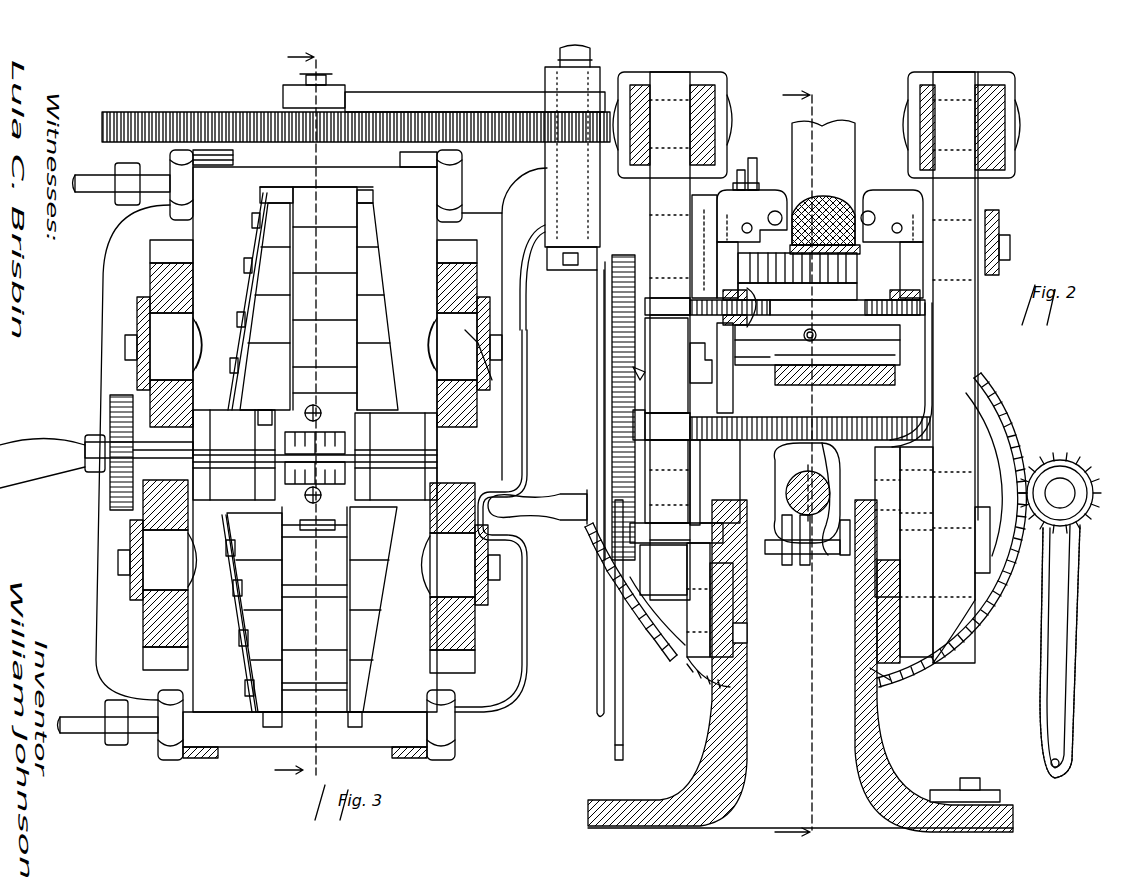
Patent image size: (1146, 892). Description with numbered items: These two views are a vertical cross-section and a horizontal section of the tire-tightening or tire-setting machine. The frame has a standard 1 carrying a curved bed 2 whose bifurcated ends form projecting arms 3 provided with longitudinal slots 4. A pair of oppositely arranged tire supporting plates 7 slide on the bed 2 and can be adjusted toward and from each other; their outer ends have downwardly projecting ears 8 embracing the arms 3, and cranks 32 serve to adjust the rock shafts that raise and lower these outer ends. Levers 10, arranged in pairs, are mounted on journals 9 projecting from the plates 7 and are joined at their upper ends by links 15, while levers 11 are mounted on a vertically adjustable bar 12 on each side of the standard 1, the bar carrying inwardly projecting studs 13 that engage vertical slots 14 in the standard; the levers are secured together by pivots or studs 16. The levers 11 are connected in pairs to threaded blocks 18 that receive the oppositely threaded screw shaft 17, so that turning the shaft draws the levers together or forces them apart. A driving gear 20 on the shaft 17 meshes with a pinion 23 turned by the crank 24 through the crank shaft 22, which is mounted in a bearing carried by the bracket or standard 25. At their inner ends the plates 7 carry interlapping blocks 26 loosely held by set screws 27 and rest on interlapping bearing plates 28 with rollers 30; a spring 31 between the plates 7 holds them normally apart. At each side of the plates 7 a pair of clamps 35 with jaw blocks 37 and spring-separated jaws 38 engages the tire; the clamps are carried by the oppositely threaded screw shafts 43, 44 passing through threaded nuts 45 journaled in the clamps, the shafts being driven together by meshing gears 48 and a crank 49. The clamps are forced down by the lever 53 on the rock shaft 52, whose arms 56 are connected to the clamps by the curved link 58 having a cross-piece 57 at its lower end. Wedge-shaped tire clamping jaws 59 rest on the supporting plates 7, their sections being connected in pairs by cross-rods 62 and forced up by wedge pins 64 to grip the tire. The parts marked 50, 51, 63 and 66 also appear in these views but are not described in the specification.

In FIG. 2, the standard 1 is at (870, 724).
In FIG. 2, the curved bed 2 is at (920, 395).
In FIG. 3, the projecting arms 3 is at (405, 155).
In FIG. 3, the slots 4 is at (302, 410).
In FIG. 2, the slots 4 is at (800, 463).
In FIG. 3, the tire supporting plates 7 is at (312, 457).
In FIG. 3, the ears 8 is at (170, 163).
In FIG. 3, the journals 9 is at (490, 378).
In FIG. 2, the journals 9 is at (1000, 248).
In FIG. 3, the levers 10 is at (480, 425).
In FIG. 2, the levers 10 is at (650, 190).
In FIG. 2, the levers 11 is at (680, 650).
In FIG. 2, the vertically adjustable bar 12 is at (715, 672).
In FIG. 2, the studs 13 is at (740, 610).
In FIG. 2, the vertical slots 14 is at (748, 635).
In FIG. 2, the links 15 is at (1000, 80).
In FIG. 2, the pivots or studs 16 is at (990, 570).
In FIG. 3, the screw shaft 17 is at (283, 160).
In FIG. 2, the screw shaft 17 is at (826, 470).
In FIG. 2, the threaded blocks 18 is at (807, 493).
In FIG. 3, the driving gear 20 is at (228, 112).
In FIG. 2, the driving gear 20 is at (1003, 420).
In FIG. 3, the crank shaft 22 is at (570, 267).
In FIG. 2, the crank shaft 22 is at (1065, 490).
In FIG. 3, the pinion 23 is at (548, 140).
In FIG. 2, the pinion 23 is at (1068, 458).
In FIG. 3, the crank 24 is at (590, 58).
In FIG. 2, the crank 24 is at (1070, 730).
In FIG. 3, the bracket or standard 25 is at (530, 262).
In FIG. 2, the bracket or standard 25 is at (1060, 598).
In FIG. 3, the blocks 26 is at (325, 453).
In FIG. 2, the blocks 26 is at (842, 265).
In FIG. 3, the set screws 27 is at (480, 94).
In FIG. 2, the bearing plates 28 is at (905, 345).
In FIG. 2, the rollers 30 is at (900, 375).
In FIG. 2, the spring 31 is at (900, 358).
In FIG. 3, the cranks 32 is at (115, 200).
In FIG. 3, the clamps 35 is at (437, 470).
In FIG. 2, the clamps 35 is at (715, 258).
In FIG. 2, the jaw blocks 37 is at (762, 194).
In FIG. 3, the jaws 38 is at (348, 442).
In FIG. 2, the jaws 38 is at (800, 185).
In FIG. 3, the screw shaft 43 is at (172, 452).
In FIG. 2, the screw shaft 43 is at (683, 379).
In FIG. 2, the screw shaft 44 is at (692, 469).
In FIG. 2, the threaded blocks or nuts 45 is at (752, 283).
In FIG. 3, the gears 48 is at (110, 410).
In FIG. 2, the gears 48 is at (605, 340).
In FIG. 3, the crank 49 is at (85, 468).
In FIG. 2, the crank 49 is at (598, 462).
In FIG. 2, the pin 50 is at (820, 337).
In FIG. 2, the screw 51 is at (800, 416).
In FIG. 2, the rock shaft 52 is at (676, 590).
In FIG. 2, the lever 53 is at (615, 636).
In FIG. 2, the arms 56 is at (787, 565).
In FIG. 2, the cross-piece 57 is at (830, 556).
In FIG. 2, the link 58 is at (860, 490).
In FIG. 3, the tire clamping jaws 59 is at (372, 590).
In FIG. 3, the cross-rods 62 is at (316, 585).
In FIG. 3, the block 63 is at (236, 565).
In FIG. 3, the wedge pins 64 is at (238, 638).
In FIG. 2, the wedge pins 64 is at (755, 160).
In FIG. 2, the block 66 is at (690, 360).